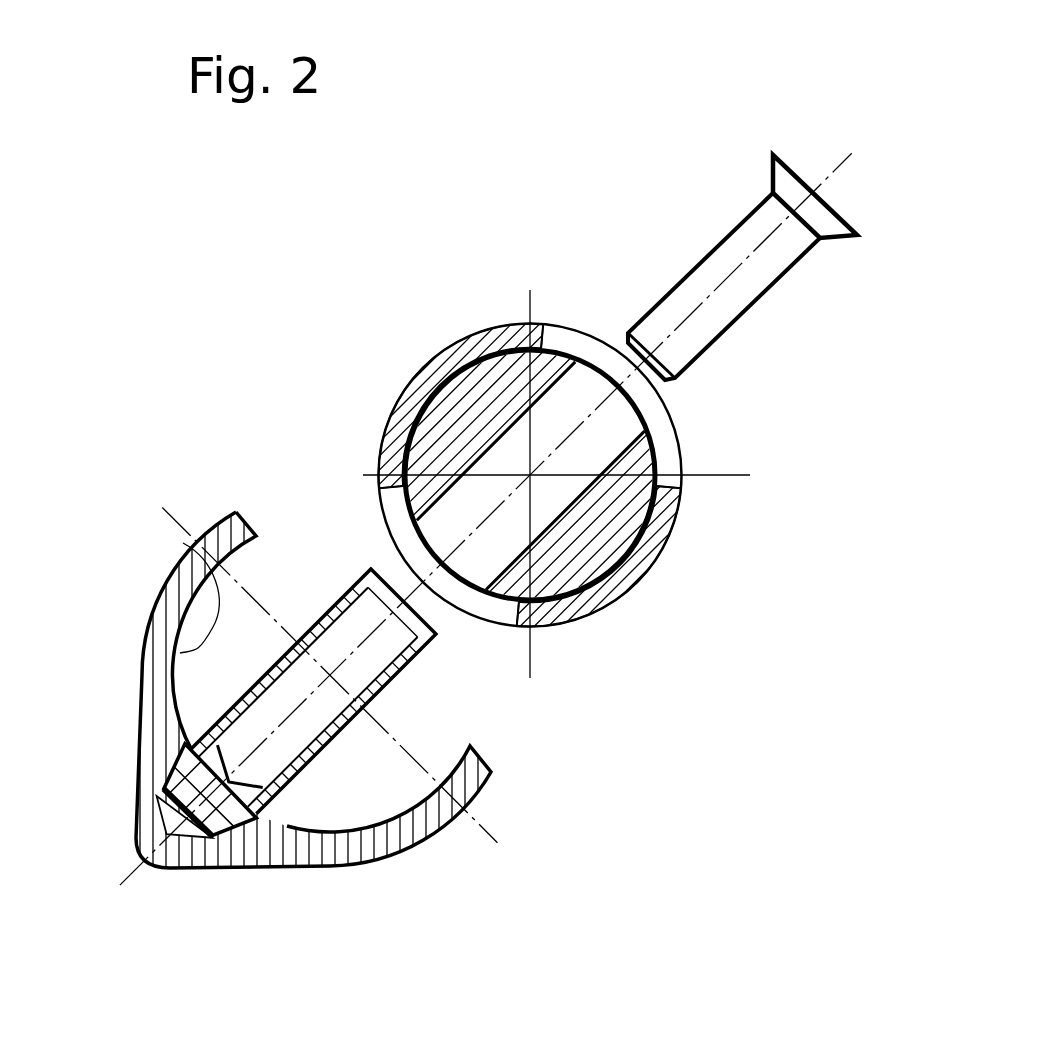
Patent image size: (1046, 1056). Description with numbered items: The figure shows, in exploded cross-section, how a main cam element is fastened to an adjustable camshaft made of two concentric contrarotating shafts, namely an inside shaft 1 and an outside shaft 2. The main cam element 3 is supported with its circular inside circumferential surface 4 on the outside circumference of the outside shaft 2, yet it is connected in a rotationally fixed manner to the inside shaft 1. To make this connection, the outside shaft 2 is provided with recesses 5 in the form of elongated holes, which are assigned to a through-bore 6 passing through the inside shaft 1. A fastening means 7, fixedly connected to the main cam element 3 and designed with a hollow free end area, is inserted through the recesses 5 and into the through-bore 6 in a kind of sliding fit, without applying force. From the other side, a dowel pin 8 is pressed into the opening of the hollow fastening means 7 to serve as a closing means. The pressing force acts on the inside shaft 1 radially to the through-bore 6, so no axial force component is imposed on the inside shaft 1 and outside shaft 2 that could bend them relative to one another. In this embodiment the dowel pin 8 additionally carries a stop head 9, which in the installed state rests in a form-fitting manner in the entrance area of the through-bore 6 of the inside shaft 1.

The inside shaft 1 is at (468, 393).
The outside shaft 2 is at (398, 373).
The main cam element 3 is at (232, 538).
The inside circumferential surface 4 is at (183, 543).
The recesses 5 is at (663, 413).
The through-bore 6 is at (573, 387).
The fastening means 7 is at (337, 598).
The dowel pin 8 is at (730, 298).
The stop head 9 is at (803, 180).